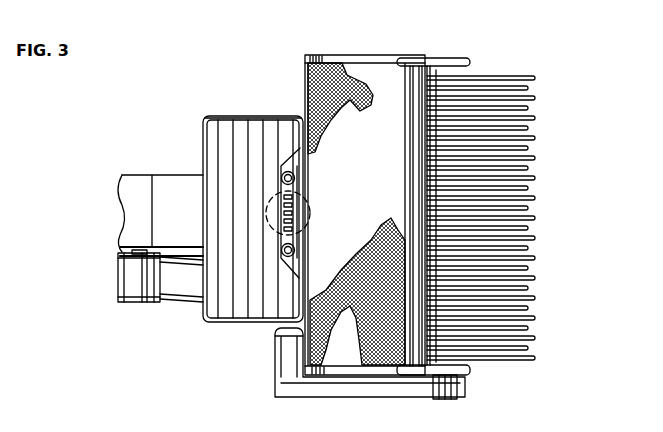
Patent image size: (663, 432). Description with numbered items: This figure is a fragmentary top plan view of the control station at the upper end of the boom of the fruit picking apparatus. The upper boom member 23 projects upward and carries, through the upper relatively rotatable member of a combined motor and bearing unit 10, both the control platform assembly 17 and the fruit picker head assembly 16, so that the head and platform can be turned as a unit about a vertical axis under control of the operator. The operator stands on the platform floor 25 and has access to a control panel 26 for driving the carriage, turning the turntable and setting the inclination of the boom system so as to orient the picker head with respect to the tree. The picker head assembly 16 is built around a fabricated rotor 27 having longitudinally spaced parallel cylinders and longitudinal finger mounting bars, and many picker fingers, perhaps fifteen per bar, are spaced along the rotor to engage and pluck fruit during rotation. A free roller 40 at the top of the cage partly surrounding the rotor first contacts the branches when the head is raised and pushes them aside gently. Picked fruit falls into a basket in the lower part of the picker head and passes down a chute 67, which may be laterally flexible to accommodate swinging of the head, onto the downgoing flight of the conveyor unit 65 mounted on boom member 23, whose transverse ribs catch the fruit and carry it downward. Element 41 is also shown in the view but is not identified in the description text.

The combined motor and bearing unit 10 is at (316, 202).
The fruit picker head assembly 16 is at (519, 71).
The control platform assembly 17 is at (268, 108).
The boom member 23 is at (132, 197).
The platform floor 25 is at (214, 126).
The control panel 26 is at (282, 187).
The rotor 27 is at (431, 84).
The free roller 40 is at (410, 78).
The panel 41 is at (327, 55).
The conveyor unit 65 is at (133, 272).
The chute 67 is at (183, 288).